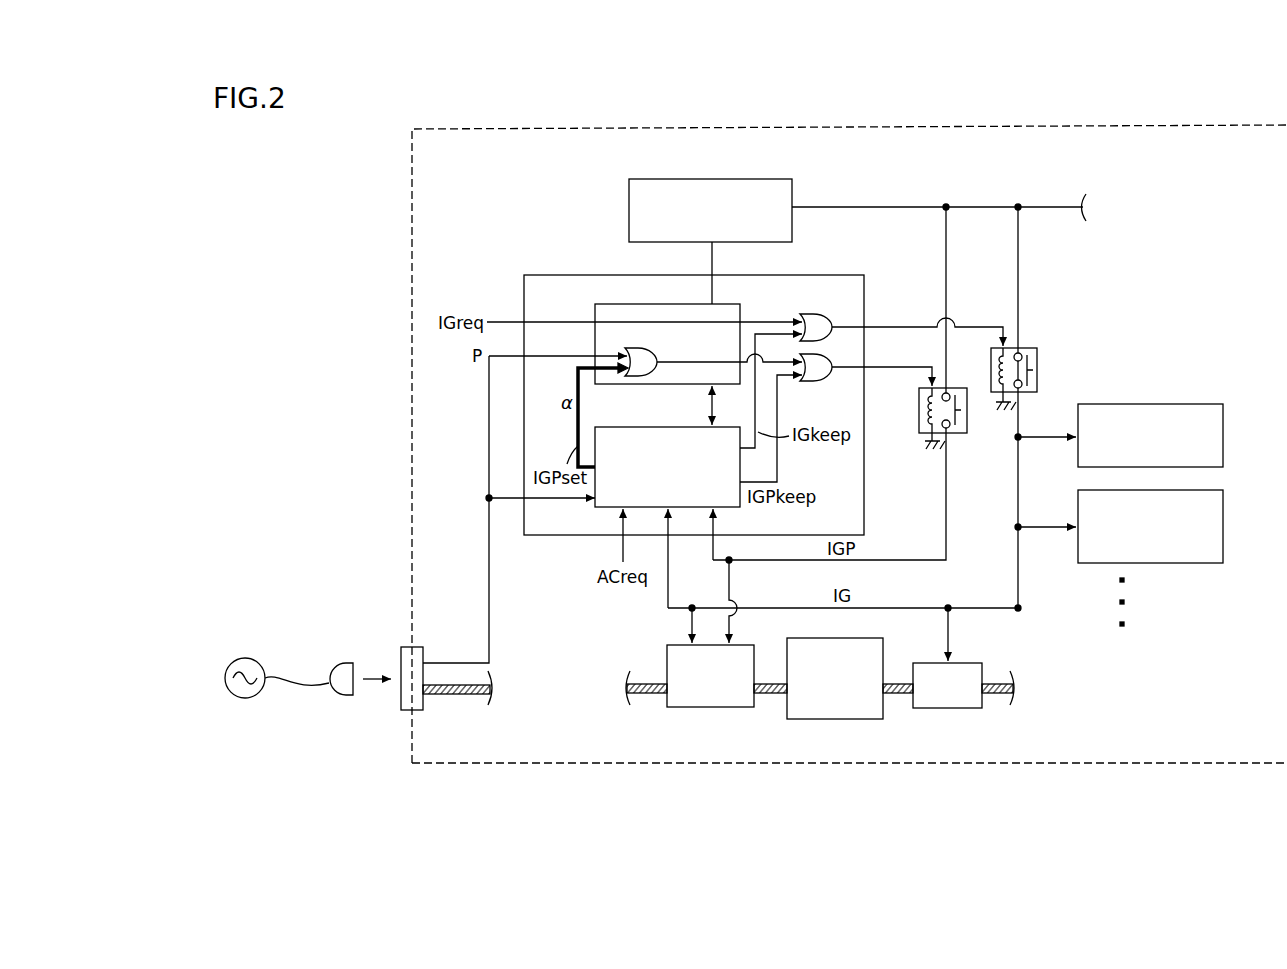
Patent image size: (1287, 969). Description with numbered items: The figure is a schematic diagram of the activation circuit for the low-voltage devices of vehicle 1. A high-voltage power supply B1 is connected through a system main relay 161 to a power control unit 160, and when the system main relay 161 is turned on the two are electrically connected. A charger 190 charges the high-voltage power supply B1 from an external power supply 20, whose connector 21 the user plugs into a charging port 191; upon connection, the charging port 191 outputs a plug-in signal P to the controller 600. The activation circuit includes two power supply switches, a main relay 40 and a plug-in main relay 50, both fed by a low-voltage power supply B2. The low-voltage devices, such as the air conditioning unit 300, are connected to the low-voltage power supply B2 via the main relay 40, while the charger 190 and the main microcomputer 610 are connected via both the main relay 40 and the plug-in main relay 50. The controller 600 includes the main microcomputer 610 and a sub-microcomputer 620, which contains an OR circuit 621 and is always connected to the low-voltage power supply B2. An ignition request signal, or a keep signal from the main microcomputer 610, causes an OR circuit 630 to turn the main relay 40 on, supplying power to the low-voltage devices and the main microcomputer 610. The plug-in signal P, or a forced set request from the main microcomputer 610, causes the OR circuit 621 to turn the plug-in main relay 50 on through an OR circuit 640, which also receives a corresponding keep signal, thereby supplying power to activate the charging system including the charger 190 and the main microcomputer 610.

The vehicle 1 is at (412, 158).
The external power supply 20 is at (245, 698).
The connector 21 is at (348, 695).
The main relay 40 is at (1033, 348).
The plug-in main relay 50 is at (962, 388).
The power control unit 160 is at (1223, 437).
The system main relay 161 is at (948, 708).
The charger 190 is at (710, 708).
The charging port 191 is at (423, 710).
The air conditioning unit 300 is at (1223, 528).
The controller 600 is at (548, 275).
The main microcomputer 610 is at (615, 427).
The sub-microcomputer 620 is at (614, 304).
The OR circuit 621 is at (657, 373).
The OR circuit 630 is at (814, 314).
The OR circuit 640 is at (814, 381).
The high-voltage power supply B1 is at (838, 719).
The low-voltage power supply B2 is at (713, 178).